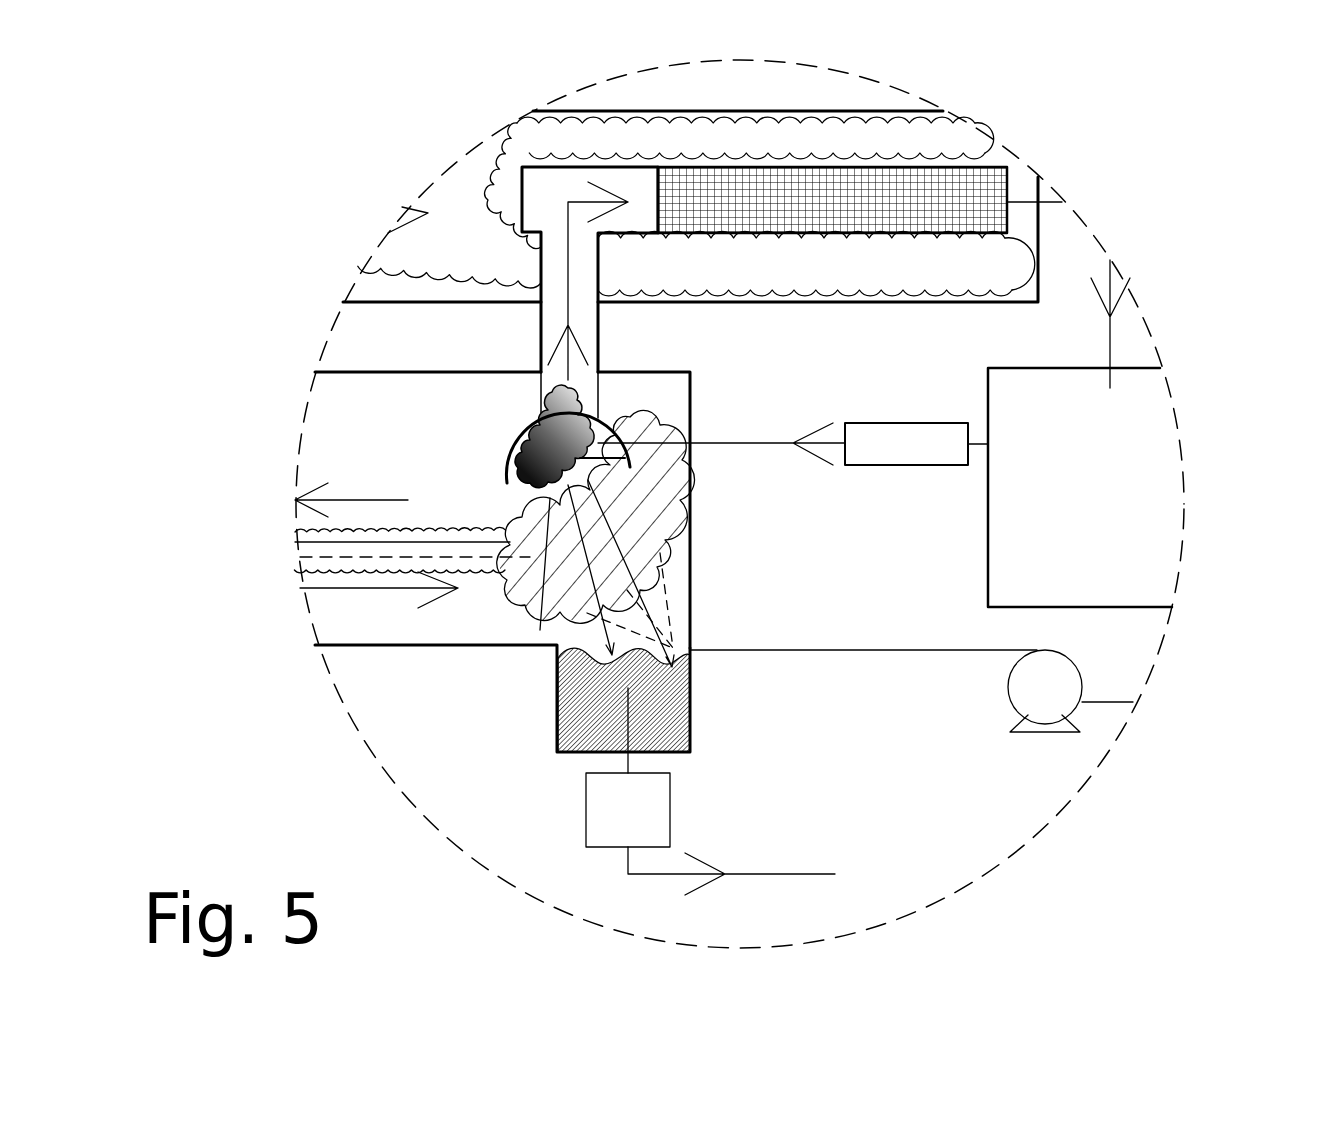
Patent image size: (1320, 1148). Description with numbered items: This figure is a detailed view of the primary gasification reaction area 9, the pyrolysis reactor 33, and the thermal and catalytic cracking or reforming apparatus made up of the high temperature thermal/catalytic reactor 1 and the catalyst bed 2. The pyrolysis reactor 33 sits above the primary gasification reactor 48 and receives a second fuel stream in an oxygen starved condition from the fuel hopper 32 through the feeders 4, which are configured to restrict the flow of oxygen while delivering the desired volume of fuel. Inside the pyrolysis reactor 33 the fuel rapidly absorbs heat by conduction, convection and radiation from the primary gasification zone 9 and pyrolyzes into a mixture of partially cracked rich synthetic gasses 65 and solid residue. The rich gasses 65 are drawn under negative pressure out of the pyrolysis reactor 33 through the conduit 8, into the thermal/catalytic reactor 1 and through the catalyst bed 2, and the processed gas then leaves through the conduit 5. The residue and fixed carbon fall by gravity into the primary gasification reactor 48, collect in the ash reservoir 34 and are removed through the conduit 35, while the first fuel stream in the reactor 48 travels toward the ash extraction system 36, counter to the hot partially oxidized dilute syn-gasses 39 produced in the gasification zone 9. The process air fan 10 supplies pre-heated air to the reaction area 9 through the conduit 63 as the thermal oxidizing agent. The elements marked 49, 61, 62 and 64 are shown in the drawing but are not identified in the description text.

The high temperature thermal/catalytic reactor 1 is at (552, 187).
The catalyst bed 2 is at (917, 197).
The feeders 4 is at (888, 468).
The conduit 5 is at (1055, 203).
The conduit 8 is at (540, 342).
The primary gasification reaction area 9 is at (700, 492).
The process air fan 10 is at (1007, 697).
The fuel hopper 32 is at (1080, 487).
The pyrolysis reactor 33 is at (597, 450).
The ash reservoir 34 is at (672, 800).
The conduit 35 is at (857, 836).
The ash extraction system 36 is at (548, 628).
The partially oxidized dilute syn-gasses 39 is at (390, 550).
The primary gasification reactor 48 is at (343, 367).
The cover wall 49 is at (578, 108).
The gas line 61 is at (1113, 342).
The air flow 62 is at (412, 502).
The conduit 63 is at (822, 650).
The exhaust flow 64 is at (463, 223).
The partially cracked rich synthetic gasses 65 is at (580, 410).